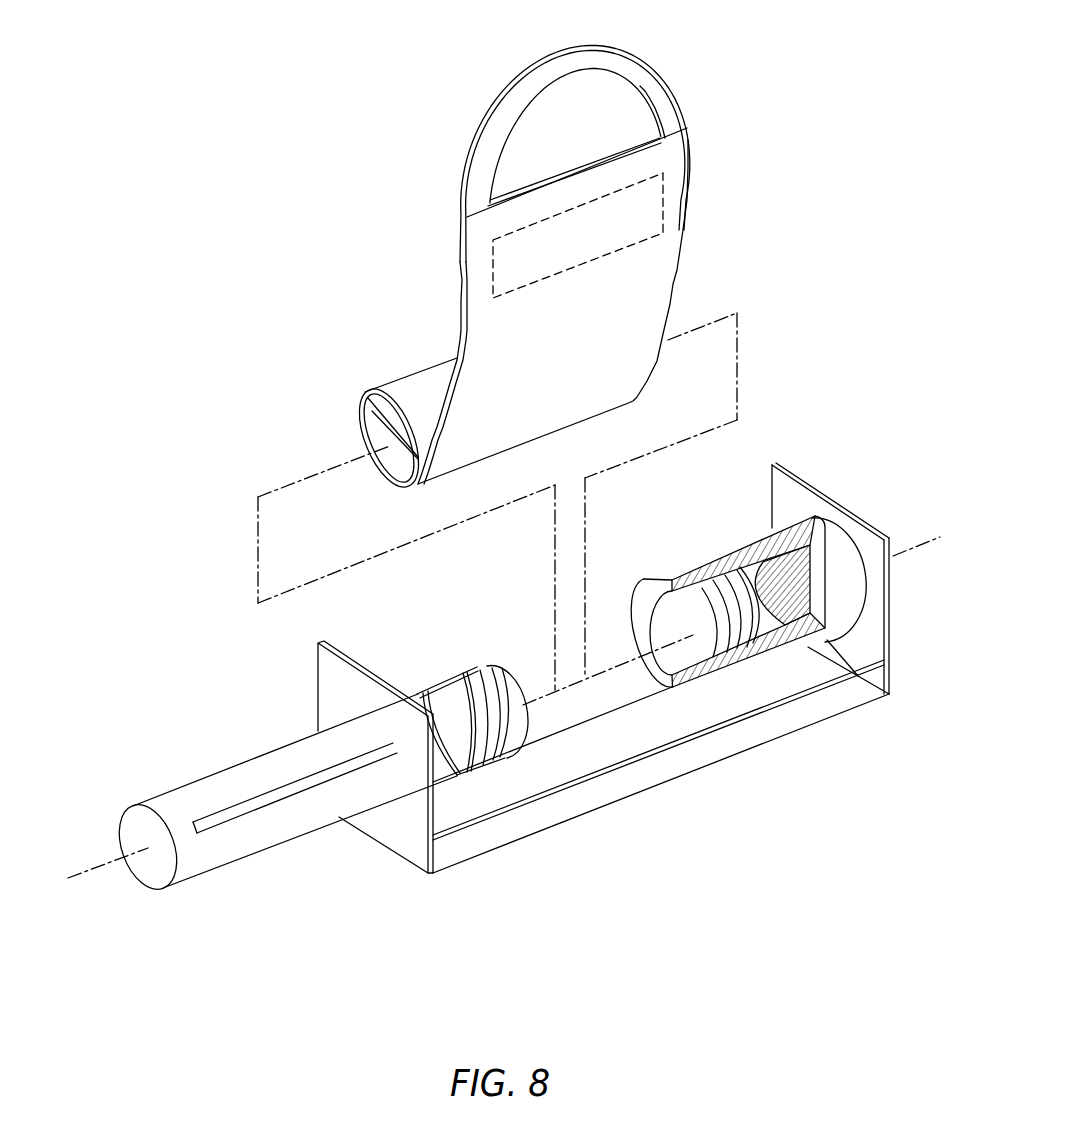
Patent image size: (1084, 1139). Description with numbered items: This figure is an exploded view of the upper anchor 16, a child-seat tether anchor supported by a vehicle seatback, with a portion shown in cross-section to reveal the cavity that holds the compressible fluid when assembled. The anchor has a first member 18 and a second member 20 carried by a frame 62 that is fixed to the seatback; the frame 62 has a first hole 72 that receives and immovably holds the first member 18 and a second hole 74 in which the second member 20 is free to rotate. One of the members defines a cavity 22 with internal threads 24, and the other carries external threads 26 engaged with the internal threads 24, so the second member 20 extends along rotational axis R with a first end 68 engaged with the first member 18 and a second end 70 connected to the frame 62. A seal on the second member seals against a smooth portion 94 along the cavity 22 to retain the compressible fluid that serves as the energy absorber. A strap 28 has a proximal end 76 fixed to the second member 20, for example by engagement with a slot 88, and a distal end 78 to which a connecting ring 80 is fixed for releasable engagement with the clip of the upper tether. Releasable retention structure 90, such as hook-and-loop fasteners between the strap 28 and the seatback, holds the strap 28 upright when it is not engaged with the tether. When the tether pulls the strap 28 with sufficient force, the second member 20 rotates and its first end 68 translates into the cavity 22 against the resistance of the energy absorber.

The upper anchor 16 is at (750, 840).
The first member 18 is at (767, 671).
The second member 20 is at (227, 847).
The cavity 22 is at (803, 580).
The internal threads 24 is at (708, 636).
The external threads 26 is at (480, 687).
The strap 28 is at (655, 307).
The frame 62 is at (527, 820).
The first end 68 is at (517, 680).
The second end 70 is at (138, 830).
The first hole 72 is at (862, 608).
The second hole 74 is at (368, 716).
The proximal end 76 is at (412, 461).
The distal end 78 is at (470, 247).
The connecting ring 80 is at (537, 68).
The slot 88 is at (220, 813).
The releasable retention structure 90 is at (663, 192).
The smooth portion 94 is at (676, 618).
The axis R is at (500, 709).